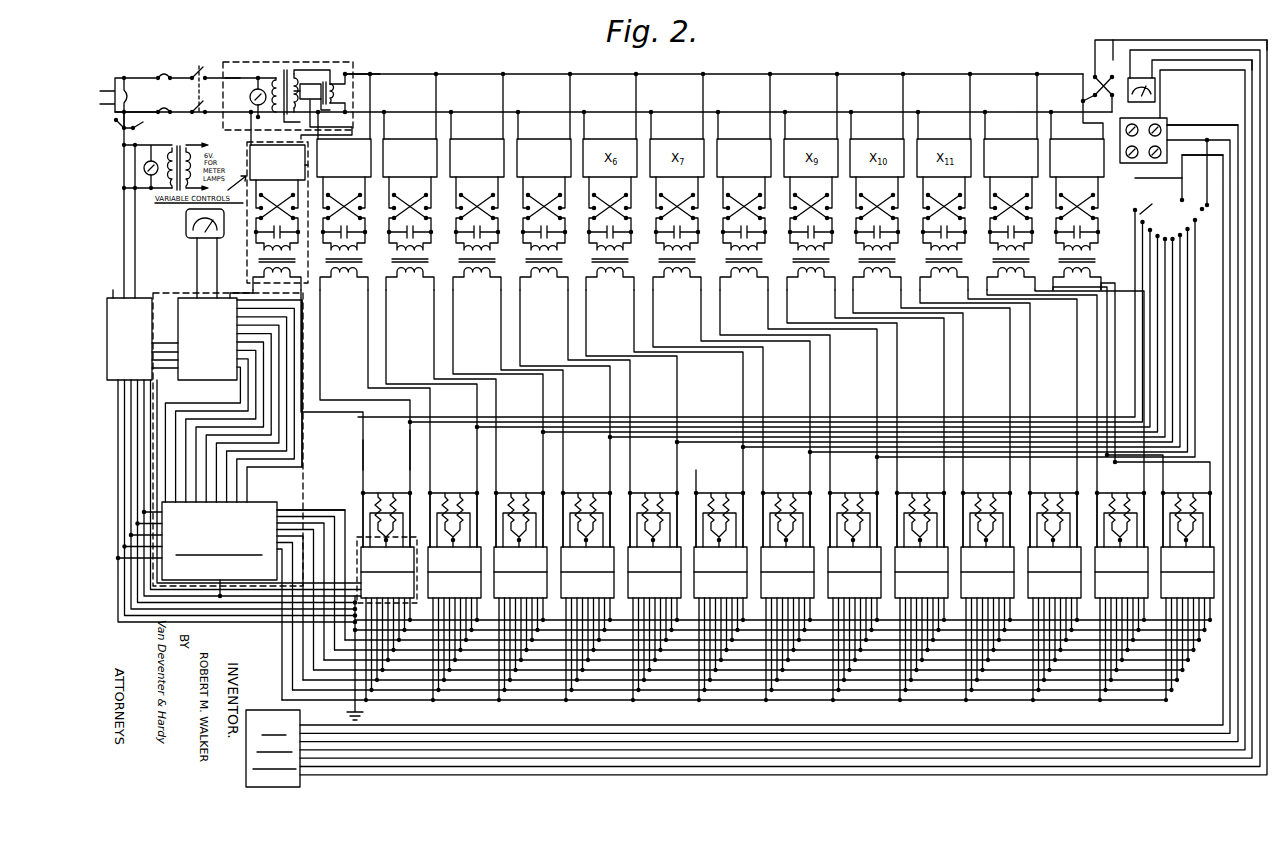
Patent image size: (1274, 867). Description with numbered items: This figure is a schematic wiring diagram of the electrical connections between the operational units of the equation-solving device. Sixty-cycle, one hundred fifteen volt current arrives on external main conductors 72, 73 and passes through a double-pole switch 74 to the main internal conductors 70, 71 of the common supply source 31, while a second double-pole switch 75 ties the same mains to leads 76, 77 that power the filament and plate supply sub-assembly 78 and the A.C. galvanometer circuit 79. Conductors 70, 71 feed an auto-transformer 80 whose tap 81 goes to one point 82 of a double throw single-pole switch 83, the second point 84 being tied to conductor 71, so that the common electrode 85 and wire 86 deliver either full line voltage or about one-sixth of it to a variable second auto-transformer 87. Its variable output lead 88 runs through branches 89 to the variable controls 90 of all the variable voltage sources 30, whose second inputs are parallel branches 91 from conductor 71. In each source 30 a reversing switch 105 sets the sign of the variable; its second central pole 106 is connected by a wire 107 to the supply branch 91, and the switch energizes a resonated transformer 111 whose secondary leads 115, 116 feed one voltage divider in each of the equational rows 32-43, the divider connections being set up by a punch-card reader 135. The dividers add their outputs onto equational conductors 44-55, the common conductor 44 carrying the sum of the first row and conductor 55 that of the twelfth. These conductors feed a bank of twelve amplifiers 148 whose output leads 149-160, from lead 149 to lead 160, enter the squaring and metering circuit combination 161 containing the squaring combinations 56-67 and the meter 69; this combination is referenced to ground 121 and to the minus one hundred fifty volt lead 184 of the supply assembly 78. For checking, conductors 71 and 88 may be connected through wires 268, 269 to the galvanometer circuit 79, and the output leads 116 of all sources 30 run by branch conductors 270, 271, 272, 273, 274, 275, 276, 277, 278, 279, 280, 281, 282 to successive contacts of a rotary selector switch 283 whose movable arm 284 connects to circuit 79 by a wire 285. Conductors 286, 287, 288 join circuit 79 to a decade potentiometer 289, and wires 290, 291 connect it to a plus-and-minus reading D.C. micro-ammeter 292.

The variable voltage source 30 is at (246, 232).
The common supply source 31 is at (242, 64).
The voltage divider rows 32-43 is at (362, 512).
The common conductor 44 is at (324, 700).
The equational conductors 44-55 is at (276, 556).
The conductor 55 is at (286, 512).
The electronic squaring combinations 56-67 is at (166, 292).
The meter 69 is at (186, 224).
The main internal conductor 70 is at (224, 64).
The main internal conductor 71 is at (251, 100).
The external main conductor 72 is at (146, 76).
The external main conductor 73 is at (158, 112).
The double-pole switch 74 is at (196, 94).
The second double-pole switch 75 is at (138, 130).
The lead 76 is at (124, 222).
The lead 77 is at (137, 228).
The filament and plate supply sub-assembly 78 is at (112, 294).
The A.C. galvanometer circuit 79 is at (244, 768).
The auto-transformer 80 is at (276, 70).
The tap 81 is at (290, 122).
The switch point 82 is at (307, 106).
The double throw single-pole switch 83 is at (318, 80).
The second switch point 84 is at (300, 70).
The common electrode 85 is at (340, 84).
The wire 86 is at (346, 78).
The second auto-transformer 87 is at (322, 114).
The variable output lead 88 is at (380, 74).
The branches 89 is at (362, 92).
The variable control 90 is at (250, 140).
The parallel branches 91 is at (396, 128).
The reversing switch 105 is at (276, 214).
The channel unit X1 section 106 is at (294, 172).
The wire 107 is at (277, 145).
The transformer 111 is at (258, 261).
The secondary lead 115 is at (372, 436).
The secondary lead 116 is at (410, 438).
The ground 121 is at (365, 713).
The punch-card reader 135 is at (387, 596).
The bank of amplifiers 148 is at (202, 575).
The amplifier output lead 149 is at (212, 378).
The amplifier output leads 149-160 is at (246, 508).
The amplifier output lead 160 is at (282, 470).
The squaring and metering circuit combination 161 is at (248, 290).
The negative voltage lead 184 is at (162, 352).
The wire 268 is at (374, 786).
The wire 269 is at (1118, 56).
The branch conductor 270 is at (452, 428).
The branch conductor 271 is at (520, 428).
The branch conductor 272 is at (584, 438).
The branch conductor 273 is at (650, 438).
The branch conductor 274 is at (718, 442).
The branch conductor 275 is at (784, 442).
The branch conductor 276 is at (850, 448).
The branch conductor 277 is at (918, 452).
The branch conductor 278 is at (984, 452).
The branch conductor 279 is at (1046, 450).
The branch conductor 280 is at (1100, 462).
The branch conductor 281 is at (1104, 478).
The branch conductor 282 is at (1115, 462).
The rotary selector switch 283 is at (1148, 212).
The movable contact arm 284 is at (1162, 216).
The wire 285 is at (1202, 209).
The conductor 286 is at (1198, 158).
The conductor 287 is at (1209, 138).
The conductor 288 is at (1202, 118).
The decade potentiometer 289 is at (1144, 118).
The wire 290 is at (1202, 66).
The wire 291 is at (1200, 60).
The D.C. micro-ammeter 292 is at (1160, 88).